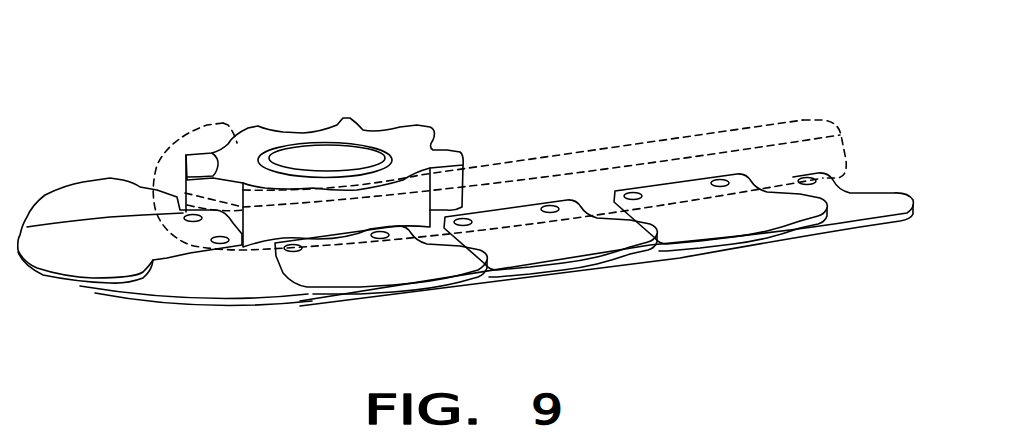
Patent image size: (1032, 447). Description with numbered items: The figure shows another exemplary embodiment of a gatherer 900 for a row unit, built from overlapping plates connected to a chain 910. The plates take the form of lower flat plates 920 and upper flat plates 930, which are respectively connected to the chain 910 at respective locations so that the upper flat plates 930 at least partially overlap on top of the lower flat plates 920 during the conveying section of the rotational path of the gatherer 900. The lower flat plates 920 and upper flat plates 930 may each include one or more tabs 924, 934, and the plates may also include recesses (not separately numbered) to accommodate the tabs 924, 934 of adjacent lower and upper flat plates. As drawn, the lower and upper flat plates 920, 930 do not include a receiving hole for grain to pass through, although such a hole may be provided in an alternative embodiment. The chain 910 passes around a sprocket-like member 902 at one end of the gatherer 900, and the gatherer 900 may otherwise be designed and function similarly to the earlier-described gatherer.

The gatherer 900 is at (532, 92).
The sprocket gear 902 is at (327, 128).
The chain 910 is at (692, 122).
The lower flat plates 920 is at (480, 278).
The tab 924 is at (883, 202).
The upper flat plates 930 is at (492, 273).
The tab 934 is at (801, 203).